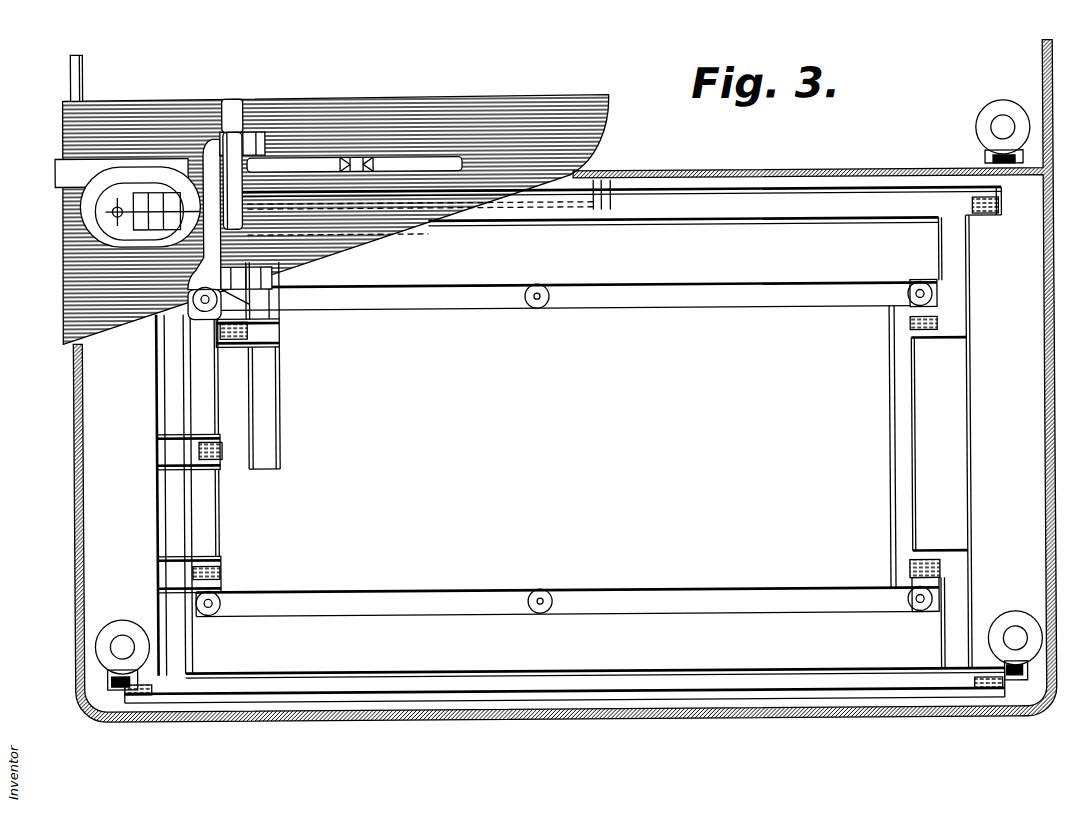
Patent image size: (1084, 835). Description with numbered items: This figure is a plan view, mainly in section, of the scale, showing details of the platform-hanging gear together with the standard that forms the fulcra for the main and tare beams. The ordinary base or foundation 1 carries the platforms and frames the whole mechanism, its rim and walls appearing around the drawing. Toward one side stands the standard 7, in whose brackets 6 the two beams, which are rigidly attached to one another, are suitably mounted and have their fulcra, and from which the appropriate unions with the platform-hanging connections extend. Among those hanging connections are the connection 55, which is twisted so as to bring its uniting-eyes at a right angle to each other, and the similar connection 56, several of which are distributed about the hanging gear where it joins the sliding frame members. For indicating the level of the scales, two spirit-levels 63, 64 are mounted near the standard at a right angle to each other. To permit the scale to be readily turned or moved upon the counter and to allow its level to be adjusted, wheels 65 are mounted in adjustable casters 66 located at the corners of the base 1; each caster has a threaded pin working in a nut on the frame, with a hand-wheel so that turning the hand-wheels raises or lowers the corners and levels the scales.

The base 1 is at (64, 280).
The brackets 6 is at (215, 141).
The standard 7 is at (95, 209).
The connection 55 is at (138, 219).
The connection 56 is at (991, 210).
The spirit-level 63 is at (240, 110).
The spirit-level 64 is at (319, 158).
The wheels 65 is at (1015, 176).
The adjustable casters 66 is at (978, 130).